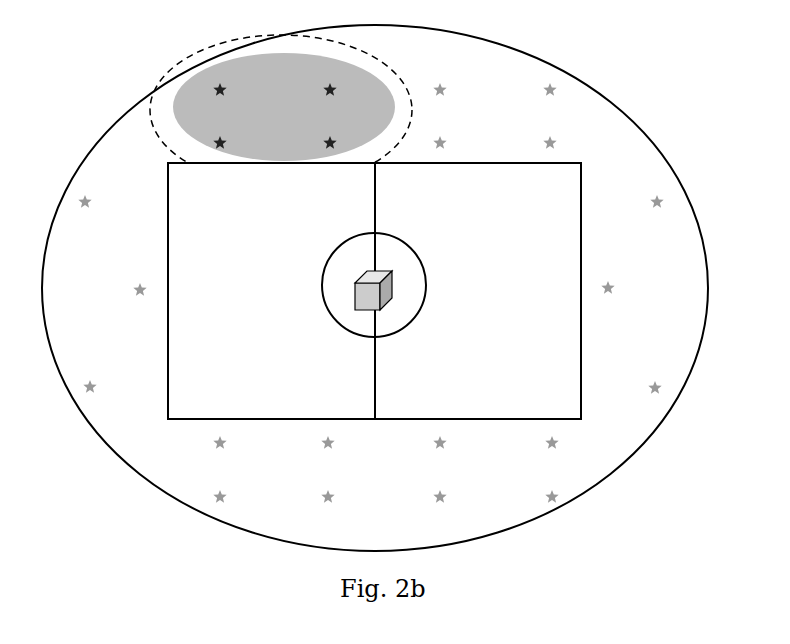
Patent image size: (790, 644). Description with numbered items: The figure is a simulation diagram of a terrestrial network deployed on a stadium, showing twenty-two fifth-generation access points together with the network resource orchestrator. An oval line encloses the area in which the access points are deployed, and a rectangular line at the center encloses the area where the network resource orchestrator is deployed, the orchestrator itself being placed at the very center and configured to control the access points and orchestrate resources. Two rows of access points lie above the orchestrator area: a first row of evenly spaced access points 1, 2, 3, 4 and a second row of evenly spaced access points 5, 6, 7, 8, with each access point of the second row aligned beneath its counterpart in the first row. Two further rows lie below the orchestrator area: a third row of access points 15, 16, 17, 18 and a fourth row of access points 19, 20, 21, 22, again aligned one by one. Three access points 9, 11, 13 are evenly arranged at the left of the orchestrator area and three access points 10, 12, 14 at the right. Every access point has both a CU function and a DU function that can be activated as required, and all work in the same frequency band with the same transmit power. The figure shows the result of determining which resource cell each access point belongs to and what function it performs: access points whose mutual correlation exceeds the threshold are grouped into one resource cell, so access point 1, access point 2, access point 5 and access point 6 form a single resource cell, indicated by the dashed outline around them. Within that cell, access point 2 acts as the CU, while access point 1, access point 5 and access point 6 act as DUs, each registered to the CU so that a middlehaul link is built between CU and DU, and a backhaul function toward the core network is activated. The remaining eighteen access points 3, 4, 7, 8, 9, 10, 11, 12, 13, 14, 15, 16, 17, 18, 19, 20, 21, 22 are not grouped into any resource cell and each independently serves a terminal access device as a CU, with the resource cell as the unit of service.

The access point 1 is at (229, 90).
The access point 2 is at (339, 90).
The access point 3 is at (449, 90).
The access point 4 is at (559, 90).
The access point 5 is at (229, 143).
The access point 6 is at (339, 143).
The access point 7 is at (449, 143).
The access point 8 is at (559, 143).
The access point 9 is at (94, 202).
The access point 10 is at (640, 202).
The access point 11 is at (123, 290).
The access point 12 is at (624, 288).
The access point 13 is at (107, 387).
The access point 14 is at (635, 388).
The access point 15 is at (236, 443).
The access point 16 is at (344, 443).
The access point 17 is at (456, 443).
The access point 18 is at (568, 443).
The access point 19 is at (236, 497).
The access point 20 is at (344, 497).
The access point 21 is at (456, 497).
The access point 22 is at (568, 497).